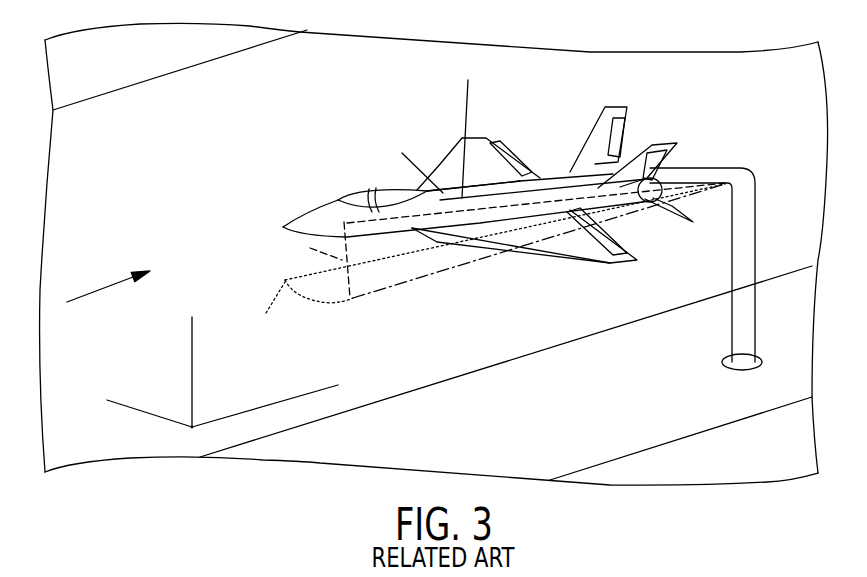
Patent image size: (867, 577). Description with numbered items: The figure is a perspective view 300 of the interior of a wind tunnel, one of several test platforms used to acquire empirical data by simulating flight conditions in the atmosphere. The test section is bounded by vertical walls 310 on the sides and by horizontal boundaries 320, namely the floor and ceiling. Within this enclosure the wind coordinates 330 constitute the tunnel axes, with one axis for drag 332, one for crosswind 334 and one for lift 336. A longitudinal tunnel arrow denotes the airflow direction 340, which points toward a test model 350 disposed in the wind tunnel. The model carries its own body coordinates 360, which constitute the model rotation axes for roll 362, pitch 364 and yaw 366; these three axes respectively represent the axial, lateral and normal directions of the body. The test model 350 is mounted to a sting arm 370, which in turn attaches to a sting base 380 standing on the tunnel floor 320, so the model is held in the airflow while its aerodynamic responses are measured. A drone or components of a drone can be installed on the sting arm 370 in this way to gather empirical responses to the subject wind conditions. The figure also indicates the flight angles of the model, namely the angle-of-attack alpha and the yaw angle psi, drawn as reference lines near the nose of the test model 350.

The perspective view 300 is at (643, 133).
The vertical walls 310 is at (192, 147).
The horizontal boundaries 320 is at (574, 412).
The wind coordinates 330 is at (197, 421).
The drag axis 332 is at (320, 385).
The crosswind axis 334 is at (115, 399).
The lift axis 336 is at (190, 330).
The airflow direction 340 is at (108, 288).
The test model 350 is at (308, 208).
The body coordinates 360 is at (493, 152).
The roll axis 362 is at (537, 184).
The pitch axis 364 is at (402, 153).
The yaw axis 366 is at (468, 80).
The sting arm 370 is at (713, 170).
The sting base 380 is at (760, 218).